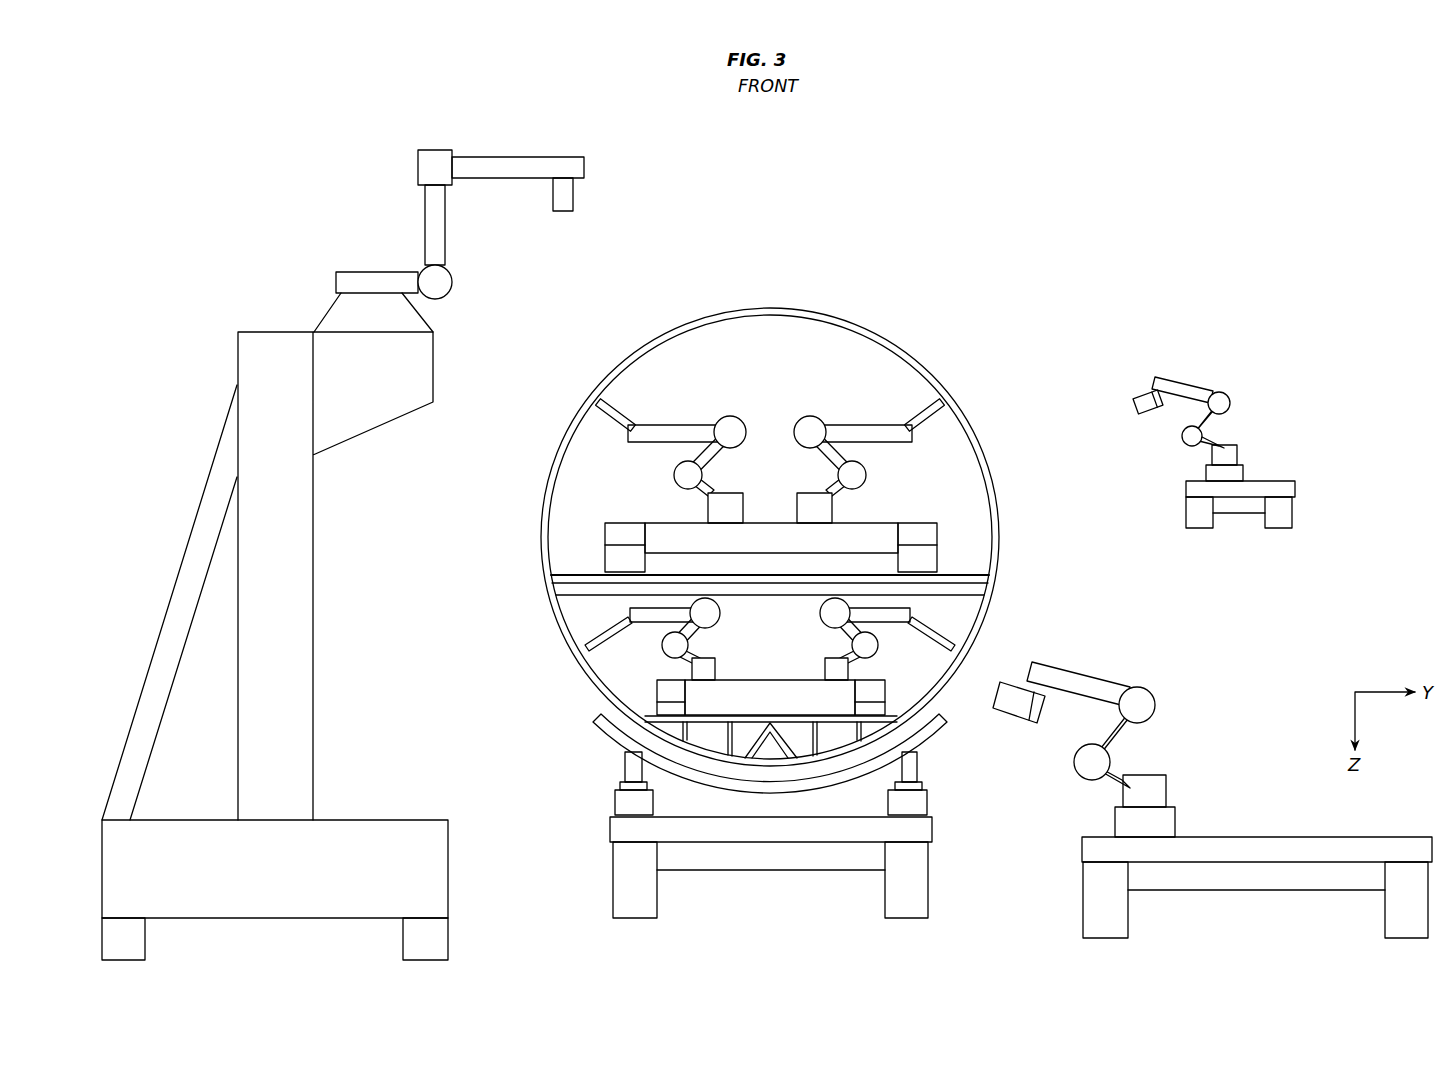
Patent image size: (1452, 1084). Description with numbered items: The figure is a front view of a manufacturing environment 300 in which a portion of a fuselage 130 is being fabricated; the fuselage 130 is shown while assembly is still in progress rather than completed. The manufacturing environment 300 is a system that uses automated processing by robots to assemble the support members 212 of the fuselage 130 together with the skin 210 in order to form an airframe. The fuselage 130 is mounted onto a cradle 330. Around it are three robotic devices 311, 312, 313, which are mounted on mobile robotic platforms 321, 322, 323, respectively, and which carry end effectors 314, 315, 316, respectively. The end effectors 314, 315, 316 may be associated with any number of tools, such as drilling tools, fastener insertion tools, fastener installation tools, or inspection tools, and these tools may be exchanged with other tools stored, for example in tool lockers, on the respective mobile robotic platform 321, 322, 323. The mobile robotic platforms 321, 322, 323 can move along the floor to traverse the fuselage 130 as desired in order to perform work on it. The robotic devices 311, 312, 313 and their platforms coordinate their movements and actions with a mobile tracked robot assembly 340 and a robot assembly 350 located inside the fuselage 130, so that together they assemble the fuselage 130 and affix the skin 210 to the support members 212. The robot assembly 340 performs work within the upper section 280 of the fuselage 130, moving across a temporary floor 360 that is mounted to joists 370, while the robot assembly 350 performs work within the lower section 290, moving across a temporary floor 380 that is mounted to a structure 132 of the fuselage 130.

The manufacturing environment 300 is at (1341, 152).
The mobile robotic platform 321 is at (178, 438).
The robotic device 311 is at (533, 195).
The end effector 314 is at (573, 198).
The skin 210 is at (807, 535).
The support members 212 is at (910, 356).
The upper section 280 is at (515, 325).
The lower section 290 is at (515, 735).
The mobile tracked robot assembly 340 is at (762, 413).
The robot assembly 350 is at (763, 658).
The temporary floor 360 is at (980, 575).
The joists 370 is at (980, 588).
The temporary floor 380 is at (887, 702).
The structure 132 is at (793, 742).
The cradle 330 is at (600, 780).
The fuselage 130 is at (1077, 338).
The robotic device 312 is at (1252, 454).
The end effector 315 is at (1148, 390).
The mobile robotic platform 322 is at (1325, 515).
The robotic device 313 is at (1212, 787).
The end effector 316 is at (1020, 680).
The mobile robotic platform 323 is at (1170, 902).